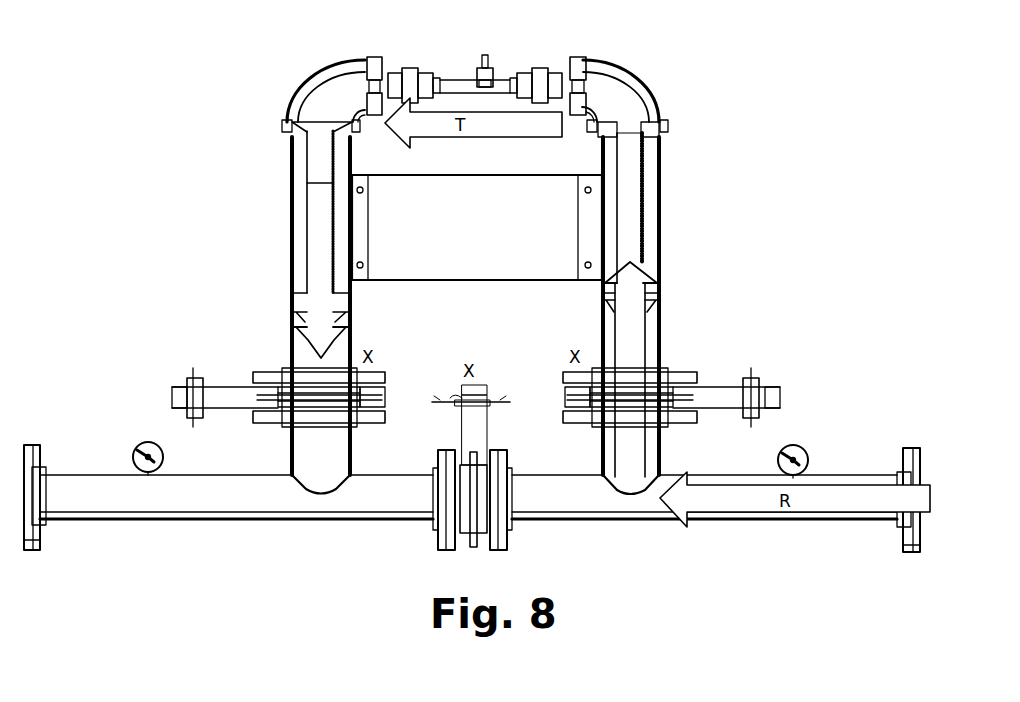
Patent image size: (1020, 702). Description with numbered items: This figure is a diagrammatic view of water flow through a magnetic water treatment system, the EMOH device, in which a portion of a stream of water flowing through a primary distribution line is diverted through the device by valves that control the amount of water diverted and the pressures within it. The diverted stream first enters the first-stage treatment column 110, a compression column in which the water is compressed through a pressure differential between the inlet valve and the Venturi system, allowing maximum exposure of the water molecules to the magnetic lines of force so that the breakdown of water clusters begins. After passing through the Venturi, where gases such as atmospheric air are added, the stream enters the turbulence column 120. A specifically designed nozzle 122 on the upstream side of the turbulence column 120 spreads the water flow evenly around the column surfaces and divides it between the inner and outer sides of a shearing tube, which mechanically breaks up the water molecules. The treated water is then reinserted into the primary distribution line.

The Stage 1 treatment column 110 is at (650, 190).
The turbulence column 120 is at (305, 252).
The nozzle 122 is at (315, 102).